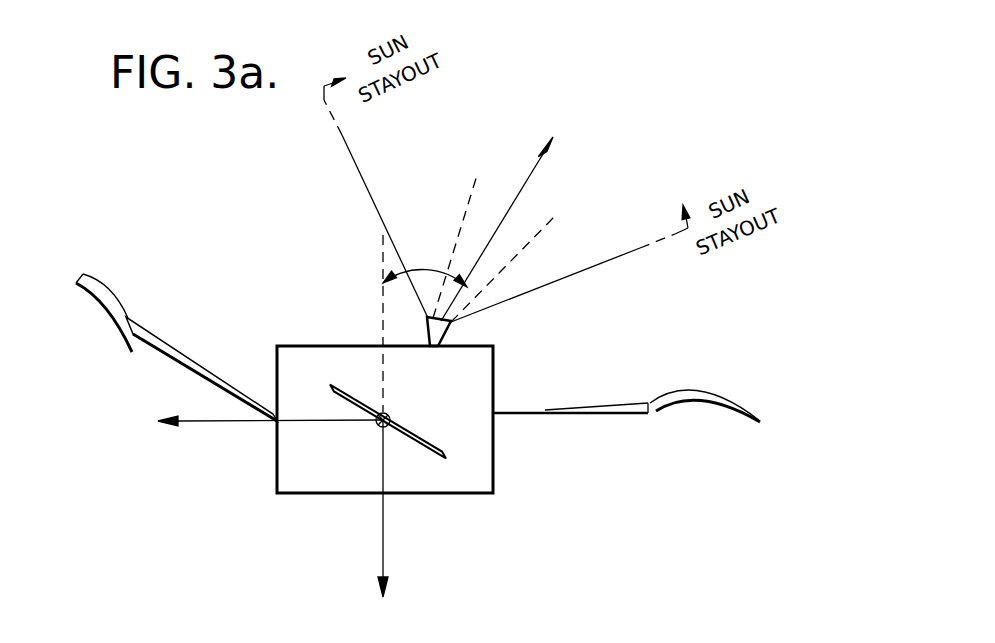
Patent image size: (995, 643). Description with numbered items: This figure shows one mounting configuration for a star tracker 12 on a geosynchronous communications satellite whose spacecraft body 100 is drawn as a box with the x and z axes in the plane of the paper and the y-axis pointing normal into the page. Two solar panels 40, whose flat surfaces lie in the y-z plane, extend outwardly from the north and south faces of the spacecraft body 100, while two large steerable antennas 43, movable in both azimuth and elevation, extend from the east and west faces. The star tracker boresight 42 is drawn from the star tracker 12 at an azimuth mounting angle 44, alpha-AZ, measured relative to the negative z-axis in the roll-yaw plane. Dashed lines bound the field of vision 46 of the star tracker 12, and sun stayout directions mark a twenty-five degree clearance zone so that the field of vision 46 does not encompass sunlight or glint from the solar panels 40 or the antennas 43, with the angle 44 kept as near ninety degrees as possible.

The spacecraft body 100 is at (493, 380).
The solar panels 40 is at (425, 452).
The steerable antennas 43 is at (112, 290).
The star tracker 12 is at (452, 323).
The star tracker boresight 42 is at (522, 188).
The field of vision 46 is at (475, 189).
The azimuth mounting angle 44 is at (421, 224).